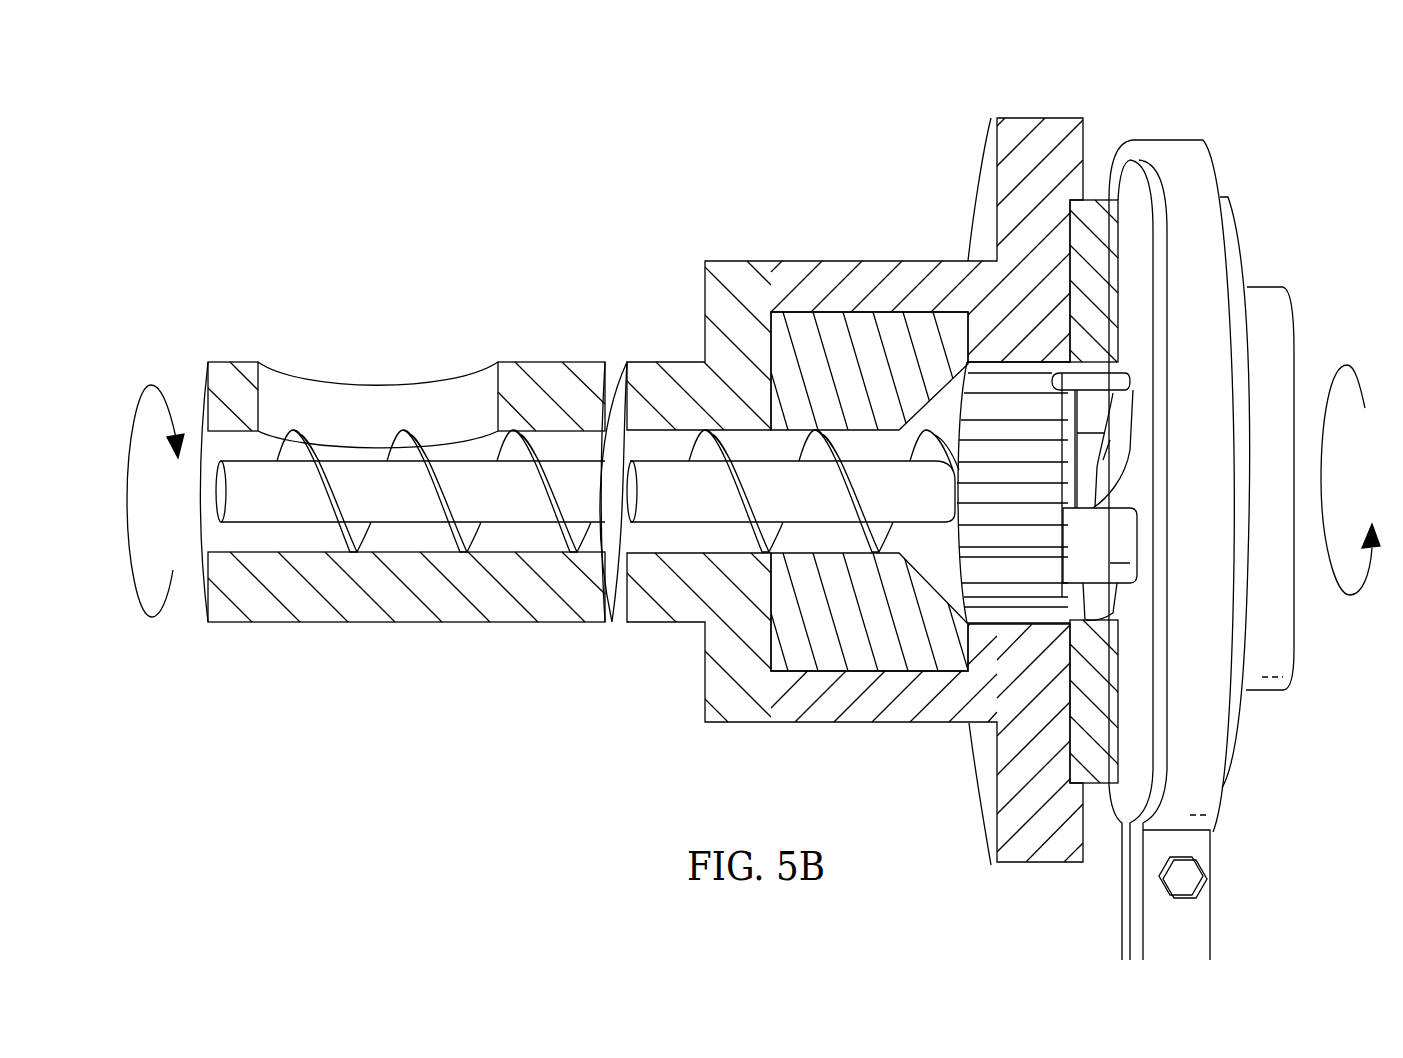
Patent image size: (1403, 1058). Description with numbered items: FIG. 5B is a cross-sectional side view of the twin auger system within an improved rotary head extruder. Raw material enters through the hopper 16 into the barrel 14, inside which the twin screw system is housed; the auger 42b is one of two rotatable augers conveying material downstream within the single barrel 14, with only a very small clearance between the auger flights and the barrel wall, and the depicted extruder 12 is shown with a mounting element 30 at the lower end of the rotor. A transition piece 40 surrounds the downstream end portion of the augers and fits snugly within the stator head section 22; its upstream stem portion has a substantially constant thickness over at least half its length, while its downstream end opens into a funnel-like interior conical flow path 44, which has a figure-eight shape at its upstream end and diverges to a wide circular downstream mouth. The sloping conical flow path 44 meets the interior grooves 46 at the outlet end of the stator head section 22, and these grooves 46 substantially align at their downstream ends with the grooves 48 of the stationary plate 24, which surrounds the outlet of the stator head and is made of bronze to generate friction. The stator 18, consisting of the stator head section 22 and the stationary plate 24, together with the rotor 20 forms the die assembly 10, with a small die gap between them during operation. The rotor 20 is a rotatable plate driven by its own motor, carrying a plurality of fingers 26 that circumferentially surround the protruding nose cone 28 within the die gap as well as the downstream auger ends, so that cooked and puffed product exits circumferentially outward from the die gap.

The die assembly 10 is at (1242, 56).
The screw 12 is at (587, 305).
The barrel 14 is at (458, 623).
The hopper 16 is at (378, 388).
The stator 18 is at (963, 101).
The rotor 20 is at (1180, 137).
The stator head section 22 is at (934, 710).
The stationary plate 24 is at (1110, 678).
The fingers 26 is at (1115, 373).
The nose cone 28 is at (1127, 470).
The handle 30 is at (1215, 887).
The transition piece 40 is at (888, 322).
The auger 42b is at (212, 500).
The interior conical flow path 44 is at (858, 436).
The interior grooves 46 is at (997, 402).
The grooves 48 is at (1083, 620).